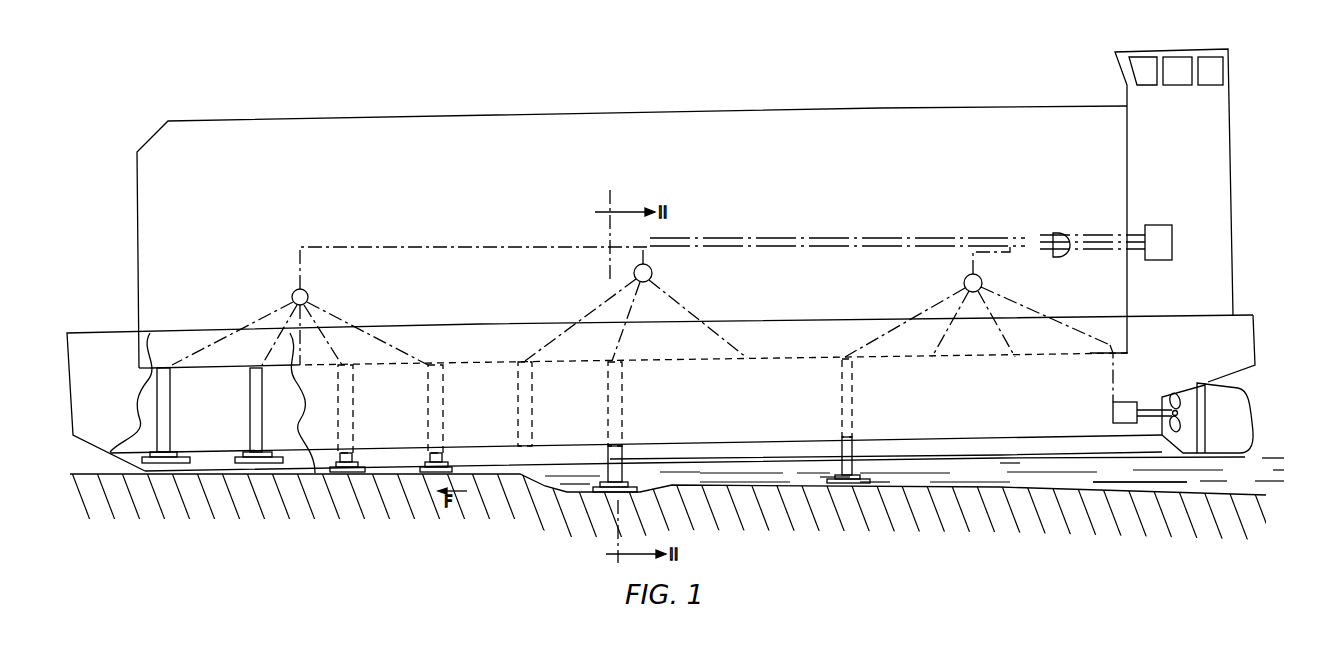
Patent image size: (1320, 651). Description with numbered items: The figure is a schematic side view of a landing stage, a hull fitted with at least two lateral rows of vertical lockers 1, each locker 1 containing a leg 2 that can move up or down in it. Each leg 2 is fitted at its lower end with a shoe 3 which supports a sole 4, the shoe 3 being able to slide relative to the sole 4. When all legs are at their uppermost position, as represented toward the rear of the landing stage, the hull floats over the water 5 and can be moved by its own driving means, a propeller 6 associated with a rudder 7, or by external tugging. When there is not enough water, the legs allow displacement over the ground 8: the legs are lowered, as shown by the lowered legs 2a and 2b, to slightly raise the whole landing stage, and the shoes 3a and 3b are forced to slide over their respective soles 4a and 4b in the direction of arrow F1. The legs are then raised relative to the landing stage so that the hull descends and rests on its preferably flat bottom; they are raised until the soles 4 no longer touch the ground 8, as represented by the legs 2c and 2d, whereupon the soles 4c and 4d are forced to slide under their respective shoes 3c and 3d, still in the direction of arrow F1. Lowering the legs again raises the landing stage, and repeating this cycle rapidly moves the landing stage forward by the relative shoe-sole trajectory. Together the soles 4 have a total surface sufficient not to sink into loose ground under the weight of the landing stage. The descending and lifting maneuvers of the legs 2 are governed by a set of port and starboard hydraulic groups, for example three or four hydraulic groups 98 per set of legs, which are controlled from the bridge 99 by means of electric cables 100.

The locker 1 is at (168, 404).
The leg 2 is at (622, 456).
The lowered leg 2a is at (352, 456).
The lowered leg 2b is at (442, 456).
The raised leg 2c is at (168, 408).
The raised leg 2d is at (262, 408).
The shoe 3 is at (624, 488).
The shoe 3a is at (356, 466).
The shoe 3b is at (447, 466).
The shoe 3c is at (172, 452).
The shoe 3d is at (266, 452).
The sole 4 is at (637, 490).
The sole 4a is at (365, 470).
The sole 4b is at (452, 470).
The sole 4c is at (180, 462).
The sole 4d is at (276, 461).
The water 5 is at (1234, 484).
The propeller 6 is at (1178, 418).
The rudder 7 is at (1232, 406).
The ground 8 is at (112, 486).
The hydraulic group 98 is at (304, 298).
The bridge 99 is at (1135, 192).
The electric cables 100 is at (1053, 236).